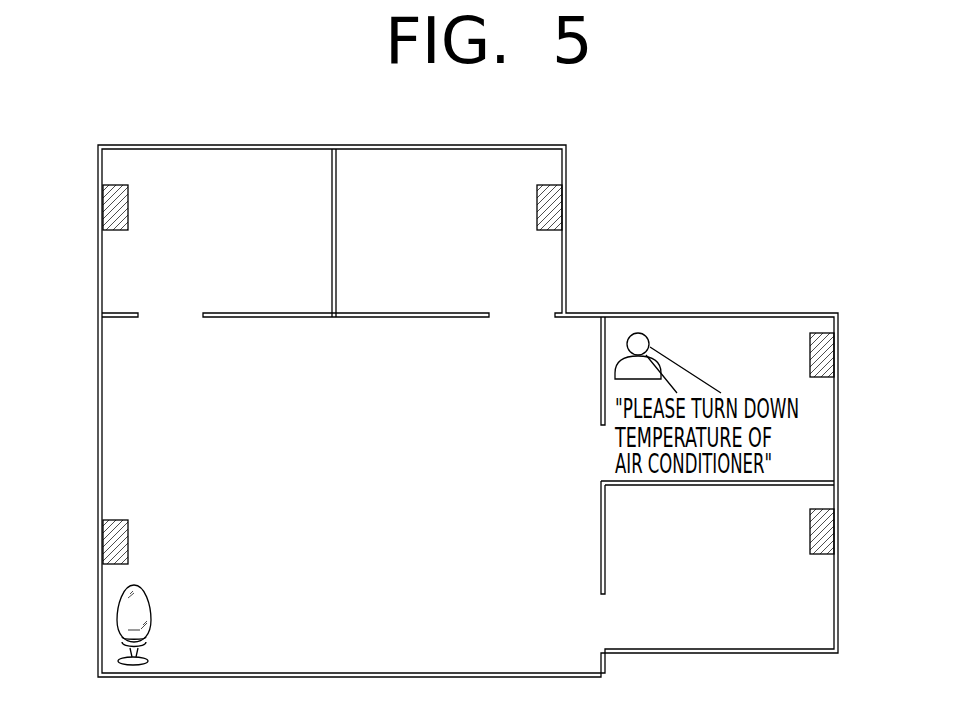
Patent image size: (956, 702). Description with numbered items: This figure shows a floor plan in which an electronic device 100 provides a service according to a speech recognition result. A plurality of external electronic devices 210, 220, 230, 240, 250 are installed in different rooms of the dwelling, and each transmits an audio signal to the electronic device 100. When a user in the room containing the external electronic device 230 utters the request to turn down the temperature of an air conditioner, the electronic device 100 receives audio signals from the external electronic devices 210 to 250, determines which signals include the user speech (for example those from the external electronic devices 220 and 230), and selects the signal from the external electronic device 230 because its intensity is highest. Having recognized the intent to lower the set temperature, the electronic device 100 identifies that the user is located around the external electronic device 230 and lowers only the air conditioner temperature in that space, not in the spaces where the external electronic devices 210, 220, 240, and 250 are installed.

The electronic device 100 is at (117, 618).
The external electronic device 210 is at (107, 209).
The external electronic device 220 is at (558, 210).
The external electronic device 230 is at (828, 352).
The external electronic device 240 is at (828, 532).
The external electronic device 250 is at (107, 541).